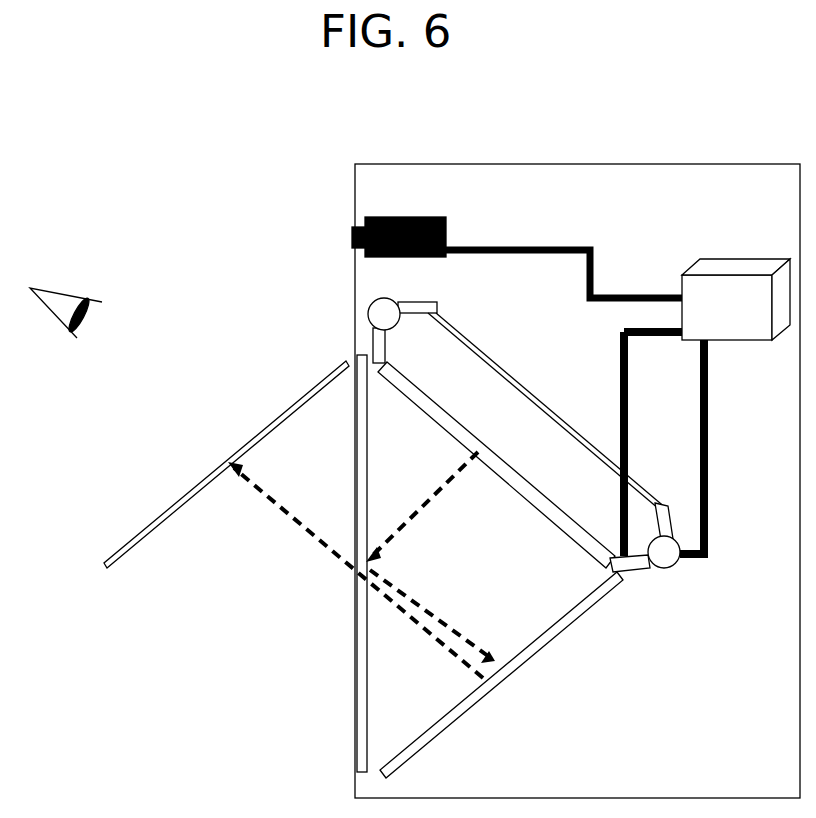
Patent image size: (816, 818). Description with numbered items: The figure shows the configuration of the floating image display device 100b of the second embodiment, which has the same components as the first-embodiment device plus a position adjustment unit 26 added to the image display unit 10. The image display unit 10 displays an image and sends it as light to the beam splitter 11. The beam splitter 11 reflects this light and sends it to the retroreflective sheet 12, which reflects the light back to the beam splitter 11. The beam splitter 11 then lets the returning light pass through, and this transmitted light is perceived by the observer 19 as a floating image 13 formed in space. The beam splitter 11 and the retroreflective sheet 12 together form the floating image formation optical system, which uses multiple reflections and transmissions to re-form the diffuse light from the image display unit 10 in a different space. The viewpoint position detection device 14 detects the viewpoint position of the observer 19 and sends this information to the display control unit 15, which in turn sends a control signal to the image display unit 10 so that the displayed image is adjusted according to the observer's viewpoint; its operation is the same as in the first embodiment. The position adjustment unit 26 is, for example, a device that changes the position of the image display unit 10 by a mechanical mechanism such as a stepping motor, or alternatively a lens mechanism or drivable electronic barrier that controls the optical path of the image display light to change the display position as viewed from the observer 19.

The floating image display device 100b is at (575, 163).
The image display unit 10 is at (562, 525).
The beam splitter 11 is at (357, 673).
The retroreflective sheet 12 is at (508, 673).
The floating image 13 is at (122, 557).
The viewpoint position detection device 14 is at (446, 232).
The display control unit 15 is at (700, 265).
The observer 19 is at (82, 300).
The position adjustment unit 26 is at (677, 567).